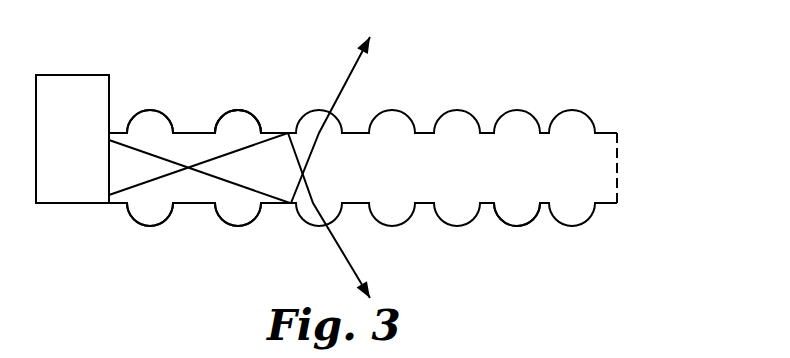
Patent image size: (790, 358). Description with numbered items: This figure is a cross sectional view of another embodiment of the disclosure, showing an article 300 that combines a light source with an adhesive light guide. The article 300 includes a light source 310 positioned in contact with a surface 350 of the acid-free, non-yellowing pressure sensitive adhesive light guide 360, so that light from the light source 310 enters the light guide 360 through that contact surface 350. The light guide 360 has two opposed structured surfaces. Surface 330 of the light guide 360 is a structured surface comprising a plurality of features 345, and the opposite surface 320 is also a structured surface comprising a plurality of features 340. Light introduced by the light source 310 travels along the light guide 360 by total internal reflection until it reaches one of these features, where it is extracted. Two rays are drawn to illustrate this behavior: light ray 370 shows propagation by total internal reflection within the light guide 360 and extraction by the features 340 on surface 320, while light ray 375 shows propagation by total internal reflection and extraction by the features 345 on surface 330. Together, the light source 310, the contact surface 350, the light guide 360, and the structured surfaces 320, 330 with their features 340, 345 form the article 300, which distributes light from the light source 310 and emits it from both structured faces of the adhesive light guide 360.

The article 300 is at (594, 77).
The light source 310 is at (74, 88).
The surface 320 is at (192, 128).
The surface 330 is at (192, 207).
The features 340 is at (244, 120).
The features 345 is at (518, 215).
The surface 350 is at (110, 190).
The acid-free, non-yellowing pressure sensitive adhesive light guide 360 is at (620, 170).
The light ray 370 is at (318, 128).
The light ray 375 is at (316, 206).